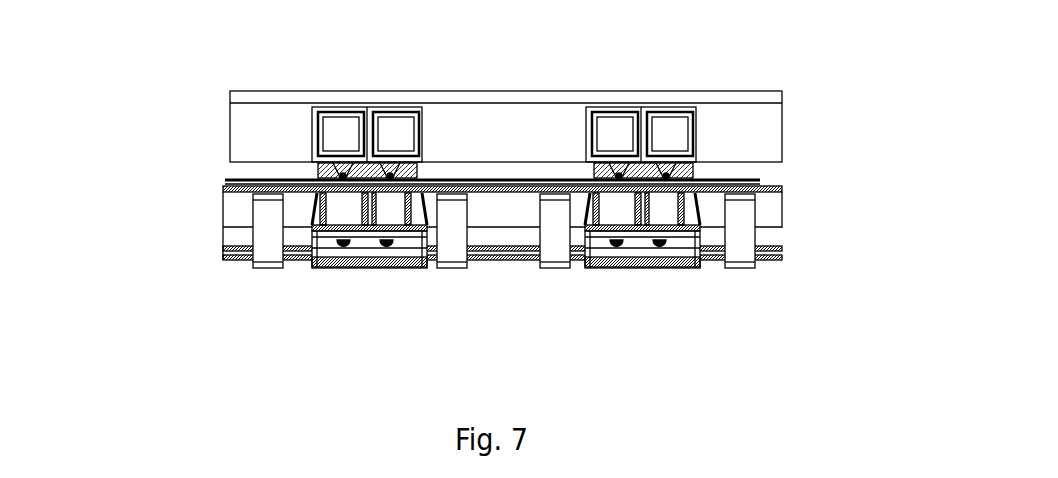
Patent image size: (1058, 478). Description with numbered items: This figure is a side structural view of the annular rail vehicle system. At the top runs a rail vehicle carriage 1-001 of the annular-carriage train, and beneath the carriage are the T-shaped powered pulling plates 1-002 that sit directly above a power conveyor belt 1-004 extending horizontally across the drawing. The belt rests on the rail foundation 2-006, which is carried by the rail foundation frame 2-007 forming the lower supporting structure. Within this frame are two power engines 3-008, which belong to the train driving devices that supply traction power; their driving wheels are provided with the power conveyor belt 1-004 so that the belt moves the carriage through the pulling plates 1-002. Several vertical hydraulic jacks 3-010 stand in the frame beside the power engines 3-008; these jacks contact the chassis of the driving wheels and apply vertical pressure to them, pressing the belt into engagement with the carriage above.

The rail vehicle carriage 1-001 is at (278, 127).
The T-shaped powered pulling plate 1-002 is at (682, 167).
The power conveyor belt 1-004 is at (594, 186).
The rail foundation 2-006 is at (228, 182).
The rail foundation frame 2-007 is at (269, 212).
The power engine 3-008 is at (310, 256).
The hydraulic jack 3-010 is at (567, 262).